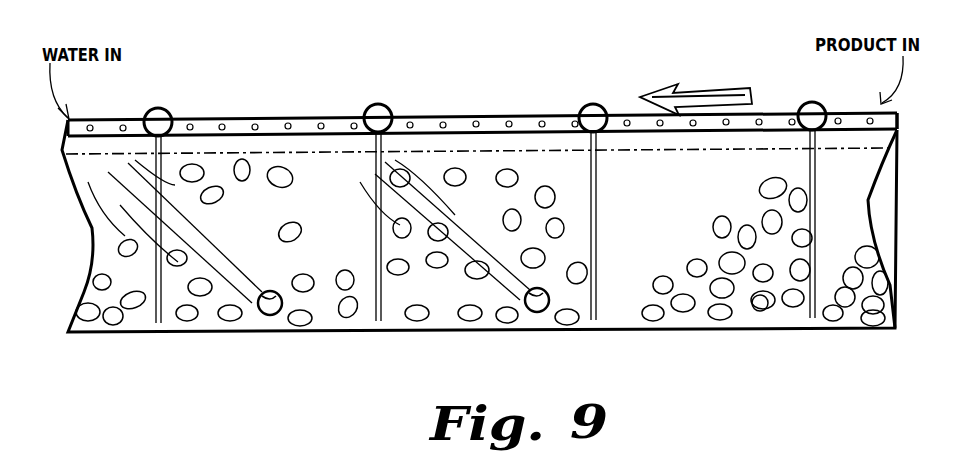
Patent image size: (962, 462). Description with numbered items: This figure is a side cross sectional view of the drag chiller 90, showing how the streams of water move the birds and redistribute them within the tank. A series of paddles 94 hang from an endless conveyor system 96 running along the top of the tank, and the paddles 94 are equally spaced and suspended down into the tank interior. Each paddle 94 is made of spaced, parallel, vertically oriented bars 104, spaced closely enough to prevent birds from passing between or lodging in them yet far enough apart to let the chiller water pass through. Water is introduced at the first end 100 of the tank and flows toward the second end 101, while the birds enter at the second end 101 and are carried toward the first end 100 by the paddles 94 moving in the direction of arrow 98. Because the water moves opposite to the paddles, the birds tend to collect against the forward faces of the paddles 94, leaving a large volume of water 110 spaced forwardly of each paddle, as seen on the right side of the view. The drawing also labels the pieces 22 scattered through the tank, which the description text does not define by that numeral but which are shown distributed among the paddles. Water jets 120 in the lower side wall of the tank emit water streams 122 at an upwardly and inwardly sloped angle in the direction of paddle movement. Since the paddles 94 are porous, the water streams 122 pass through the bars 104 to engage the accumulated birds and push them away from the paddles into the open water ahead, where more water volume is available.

The product pieces 22 is at (137, 323).
The drag chiller 90 is at (311, 100).
The paddles 94 is at (374, 228).
The endless conveyor system 96 is at (473, 122).
The arrow 98 is at (718, 95).
The first end 100 is at (122, 112).
The second end 101 is at (878, 137).
The bars 104 is at (822, 142).
The volume of water 110 is at (866, 232).
The water jets 120 is at (267, 313).
The water streams 122 is at (225, 258).